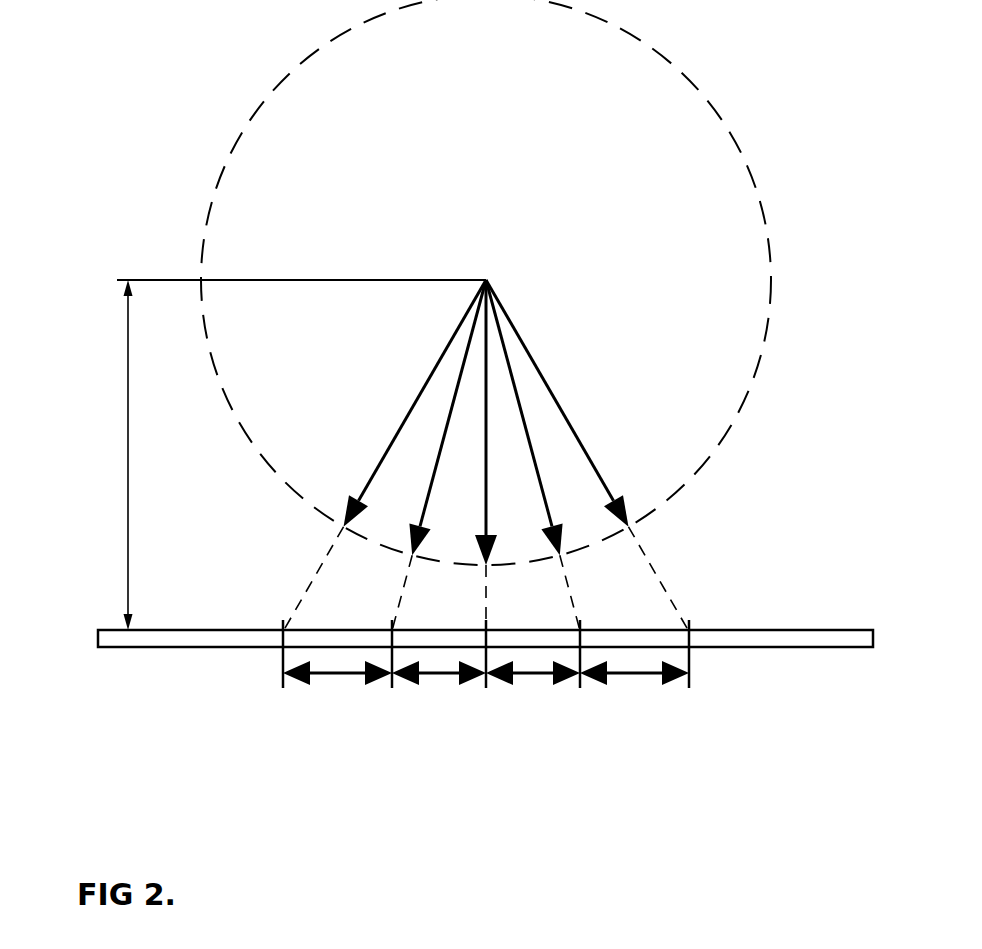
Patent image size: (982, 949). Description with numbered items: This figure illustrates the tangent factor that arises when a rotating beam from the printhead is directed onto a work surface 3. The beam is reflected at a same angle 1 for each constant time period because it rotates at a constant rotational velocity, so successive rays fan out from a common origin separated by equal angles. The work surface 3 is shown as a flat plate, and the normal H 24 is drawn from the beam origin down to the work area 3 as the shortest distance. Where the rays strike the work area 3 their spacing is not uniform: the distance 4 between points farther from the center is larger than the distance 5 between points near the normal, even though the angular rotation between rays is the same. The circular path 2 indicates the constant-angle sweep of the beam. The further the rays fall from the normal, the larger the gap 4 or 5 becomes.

The angle 1 is at (500, 322).
The circular scan region 2 is at (705, 470).
The work surface 3 is at (760, 630).
The distance 4 is at (340, 672).
The distance 5 is at (400, 710).
The normal distance H 24 is at (125, 395).